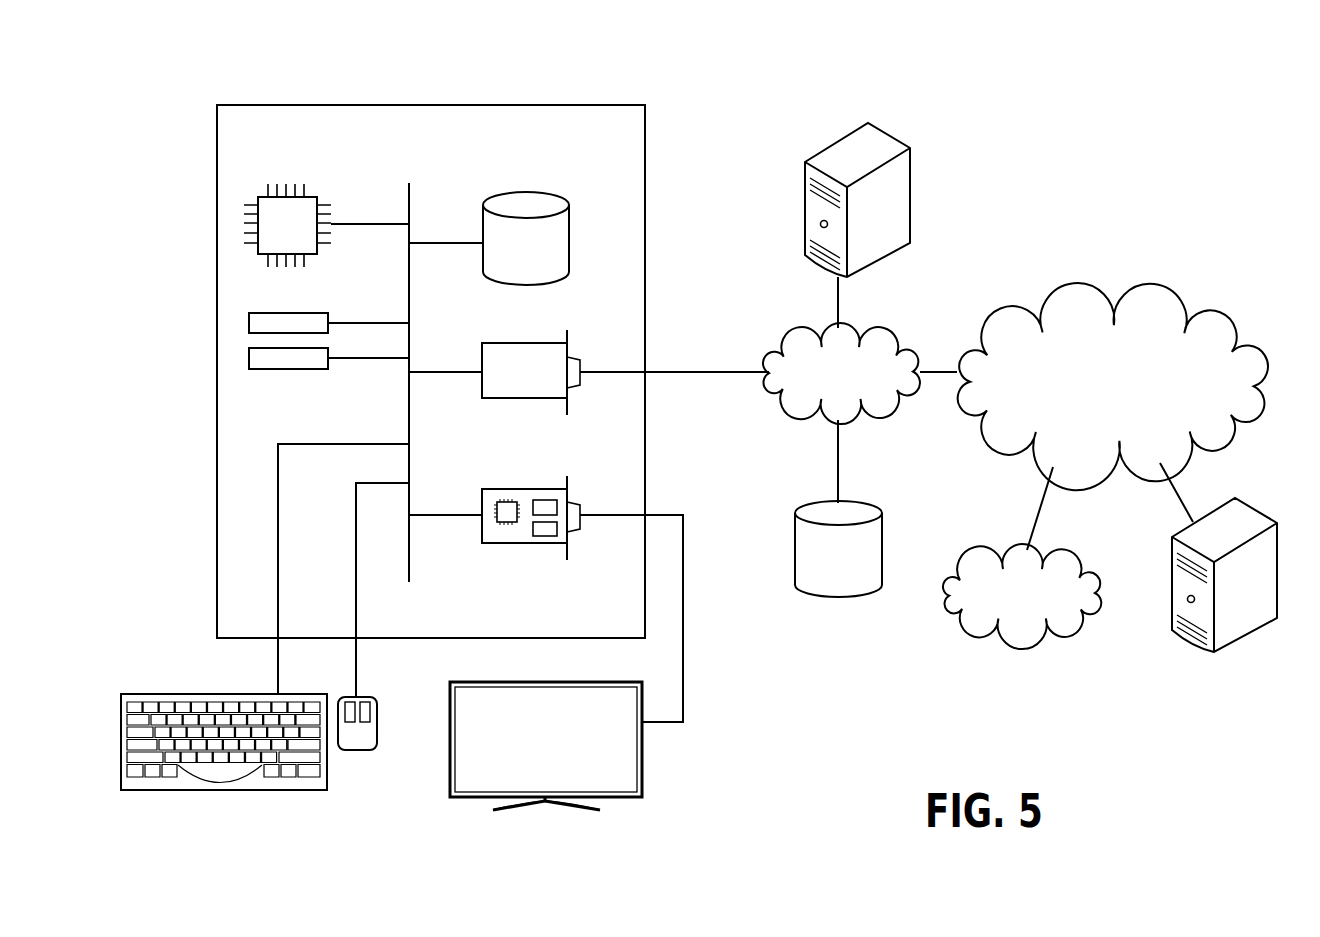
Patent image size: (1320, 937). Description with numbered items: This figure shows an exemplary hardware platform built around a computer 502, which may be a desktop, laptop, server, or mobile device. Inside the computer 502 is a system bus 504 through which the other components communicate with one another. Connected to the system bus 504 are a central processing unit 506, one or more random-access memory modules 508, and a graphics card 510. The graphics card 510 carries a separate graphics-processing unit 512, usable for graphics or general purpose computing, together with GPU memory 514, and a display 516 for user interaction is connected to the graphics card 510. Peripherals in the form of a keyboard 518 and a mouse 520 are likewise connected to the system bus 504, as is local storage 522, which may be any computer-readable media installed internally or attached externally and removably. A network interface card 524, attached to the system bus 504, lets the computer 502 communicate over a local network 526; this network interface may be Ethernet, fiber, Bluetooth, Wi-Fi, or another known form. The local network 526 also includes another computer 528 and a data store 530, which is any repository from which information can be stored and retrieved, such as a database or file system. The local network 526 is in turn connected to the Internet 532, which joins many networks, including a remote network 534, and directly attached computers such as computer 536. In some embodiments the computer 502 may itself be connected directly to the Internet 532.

The computer 502 is at (595, 105).
The system bus 504 is at (410, 193).
The central processing unit 506 is at (312, 190).
The random-access memory modules 508 is at (333, 355).
The graphics card 510 is at (546, 582).
The graphics-processing unit 512 is at (505, 524).
The GPU memory 514 is at (543, 533).
The display 516 is at (643, 776).
The keyboard 518 is at (227, 790).
The mouse 520 is at (355, 750).
The local storage 522 is at (572, 225).
The network interface card 524 is at (482, 353).
The local network 526 is at (897, 328).
The computer 528 is at (893, 135).
The data store 530 is at (872, 503).
The Internet 532 is at (1160, 290).
The remote network 534 is at (1078, 548).
The computer 536 is at (1253, 503).